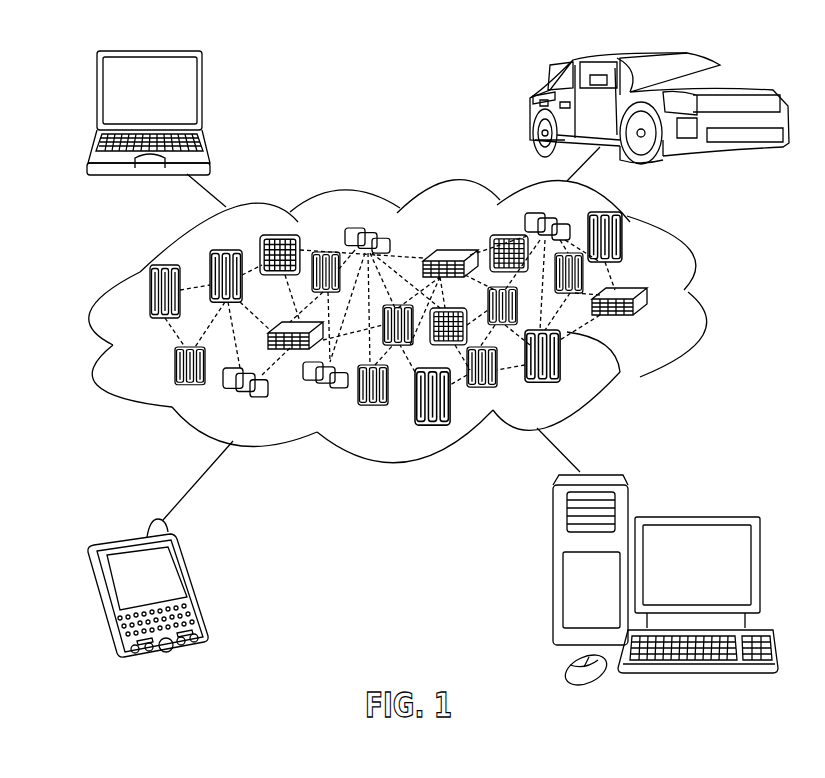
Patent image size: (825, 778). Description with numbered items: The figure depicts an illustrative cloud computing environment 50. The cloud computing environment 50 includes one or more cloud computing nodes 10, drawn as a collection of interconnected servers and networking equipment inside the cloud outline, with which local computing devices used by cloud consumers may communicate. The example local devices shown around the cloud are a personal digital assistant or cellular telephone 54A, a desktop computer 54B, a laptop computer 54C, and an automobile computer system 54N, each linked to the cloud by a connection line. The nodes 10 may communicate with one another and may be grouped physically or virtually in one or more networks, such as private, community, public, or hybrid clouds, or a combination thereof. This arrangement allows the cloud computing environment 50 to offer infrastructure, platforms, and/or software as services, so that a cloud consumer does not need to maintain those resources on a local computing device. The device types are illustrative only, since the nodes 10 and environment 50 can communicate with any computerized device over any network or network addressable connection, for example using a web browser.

The cloud computing nodes 10 is at (653, 323).
The cloud computing environment 50 is at (692, 298).
The personal digital assistant or cellular telephone 54A is at (192, 587).
The desktop computer 54B is at (697, 516).
The laptop computer 54C is at (205, 97).
The automobile computer system 54N is at (533, 108).